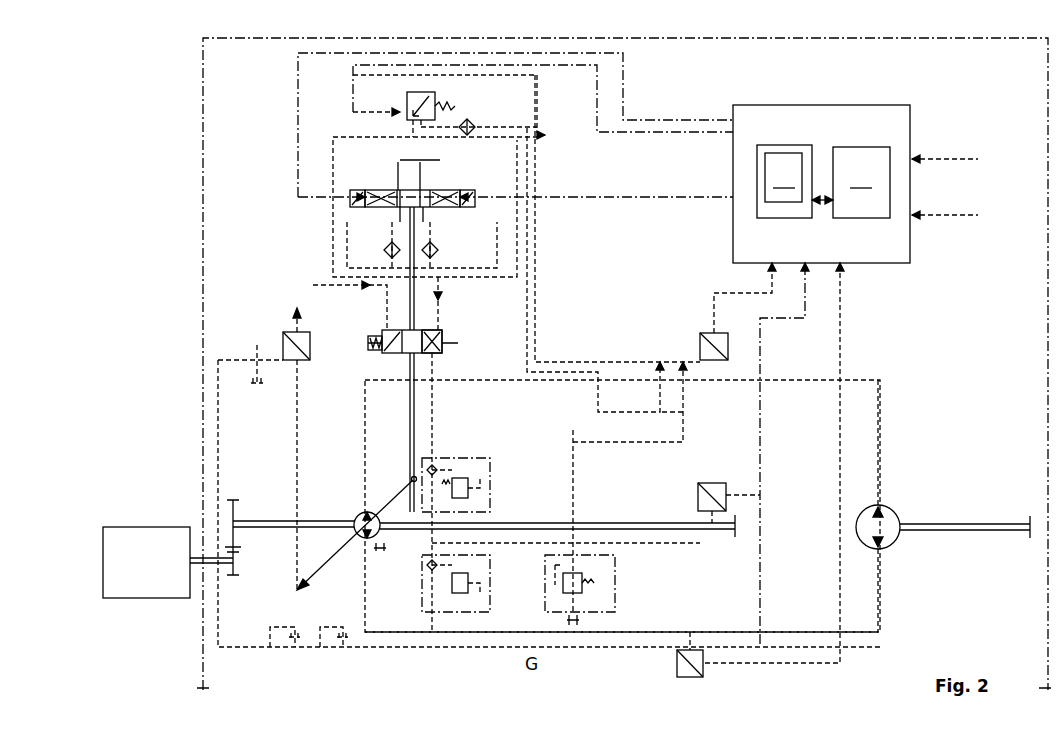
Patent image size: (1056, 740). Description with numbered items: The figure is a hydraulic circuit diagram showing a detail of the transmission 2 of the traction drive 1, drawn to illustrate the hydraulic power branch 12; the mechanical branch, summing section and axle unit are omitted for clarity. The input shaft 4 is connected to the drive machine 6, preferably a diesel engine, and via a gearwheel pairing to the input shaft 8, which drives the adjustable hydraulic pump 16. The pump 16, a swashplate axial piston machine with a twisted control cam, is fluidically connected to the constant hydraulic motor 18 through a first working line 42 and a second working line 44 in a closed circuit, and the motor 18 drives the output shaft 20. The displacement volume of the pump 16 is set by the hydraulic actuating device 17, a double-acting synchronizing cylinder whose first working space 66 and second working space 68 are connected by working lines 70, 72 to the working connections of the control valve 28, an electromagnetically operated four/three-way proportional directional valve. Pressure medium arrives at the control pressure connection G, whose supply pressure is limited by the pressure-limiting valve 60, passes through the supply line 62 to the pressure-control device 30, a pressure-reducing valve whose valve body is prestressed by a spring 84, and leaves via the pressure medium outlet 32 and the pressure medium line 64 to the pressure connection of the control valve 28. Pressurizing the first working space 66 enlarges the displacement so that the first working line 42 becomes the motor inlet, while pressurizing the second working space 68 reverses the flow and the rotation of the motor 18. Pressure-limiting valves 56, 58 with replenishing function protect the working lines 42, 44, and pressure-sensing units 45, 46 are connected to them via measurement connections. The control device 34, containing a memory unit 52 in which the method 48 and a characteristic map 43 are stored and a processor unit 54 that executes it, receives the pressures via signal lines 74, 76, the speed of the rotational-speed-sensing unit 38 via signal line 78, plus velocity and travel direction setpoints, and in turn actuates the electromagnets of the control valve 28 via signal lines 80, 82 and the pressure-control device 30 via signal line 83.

The hydraulic drive system 1 is at (178, 160).
The transmission 2 is at (203, 243).
The input shaft 4 is at (238, 570).
The drive machine 6 is at (150, 527).
The input shaft 8 is at (262, 520).
The hydraulic power branch 12 is at (248, 410).
The hydraulic pump 16 is at (352, 515).
The hydraulic actuating device 17 is at (438, 354).
The hydraulic motor 18 is at (893, 507).
The output shaft 20 is at (968, 530).
The control valve 28 is at (470, 200).
The pressure-control device 30 is at (445, 100).
The pressure medium outlet 32 is at (407, 100).
The control device 34 is at (912, 115).
The rotational-speed-sensing unit 38 is at (713, 483).
The first working line 42 is at (533, 385).
The characteristic map 43 is at (893, 265).
The second working line 44 is at (672, 630).
The pressure-sensing unit 45 is at (700, 335).
The pressure-sensing unit 46 is at (703, 676).
The method 48 is at (783, 177).
The memory unit 52 is at (778, 145).
The processor unit 54 is at (851, 182).
The pressure-limiting valve 56 is at (460, 458).
The pressure-limiting valve 58 is at (490, 578).
The pressure-limiting valve 60 is at (615, 580).
The supply line 62 is at (575, 490).
The pressure medium line 64 is at (410, 158).
The first working space 66 is at (380, 355).
The second working space 68 is at (440, 330).
The working line 70 is at (345, 240).
The working line 72 is at (497, 252).
The signal line 74 is at (730, 290).
The signal line 76 is at (845, 340).
The signal line 78 is at (783, 320).
The signal line 80 is at (683, 120).
The signal line 82 is at (690, 200).
The signal line 83 is at (690, 132).
The spring 84 is at (478, 125).